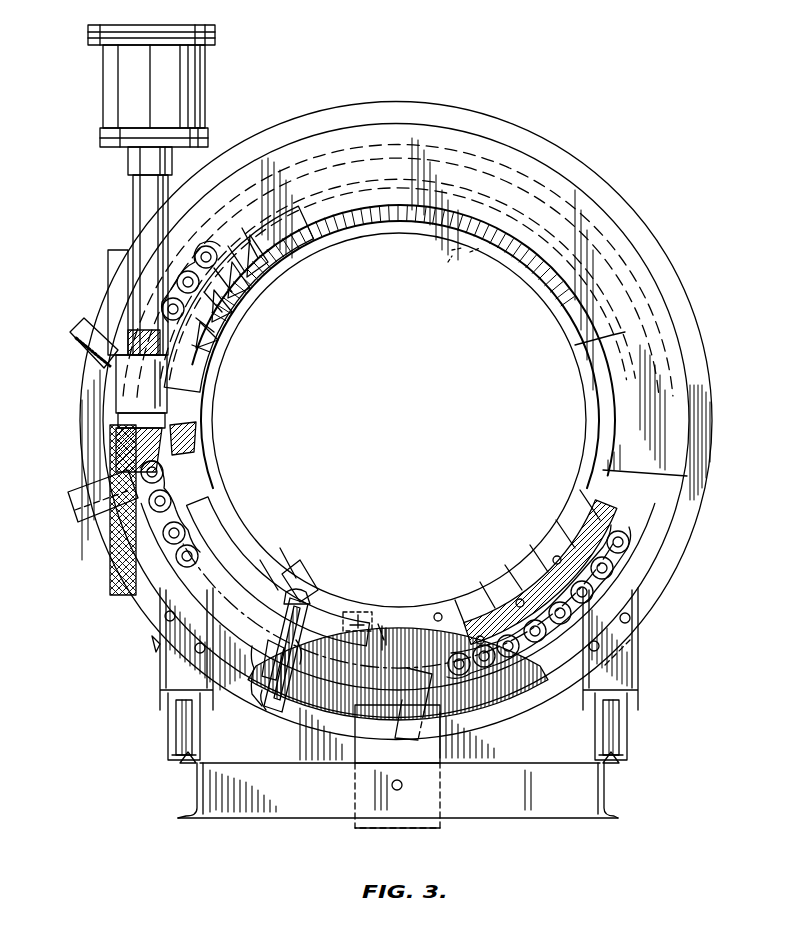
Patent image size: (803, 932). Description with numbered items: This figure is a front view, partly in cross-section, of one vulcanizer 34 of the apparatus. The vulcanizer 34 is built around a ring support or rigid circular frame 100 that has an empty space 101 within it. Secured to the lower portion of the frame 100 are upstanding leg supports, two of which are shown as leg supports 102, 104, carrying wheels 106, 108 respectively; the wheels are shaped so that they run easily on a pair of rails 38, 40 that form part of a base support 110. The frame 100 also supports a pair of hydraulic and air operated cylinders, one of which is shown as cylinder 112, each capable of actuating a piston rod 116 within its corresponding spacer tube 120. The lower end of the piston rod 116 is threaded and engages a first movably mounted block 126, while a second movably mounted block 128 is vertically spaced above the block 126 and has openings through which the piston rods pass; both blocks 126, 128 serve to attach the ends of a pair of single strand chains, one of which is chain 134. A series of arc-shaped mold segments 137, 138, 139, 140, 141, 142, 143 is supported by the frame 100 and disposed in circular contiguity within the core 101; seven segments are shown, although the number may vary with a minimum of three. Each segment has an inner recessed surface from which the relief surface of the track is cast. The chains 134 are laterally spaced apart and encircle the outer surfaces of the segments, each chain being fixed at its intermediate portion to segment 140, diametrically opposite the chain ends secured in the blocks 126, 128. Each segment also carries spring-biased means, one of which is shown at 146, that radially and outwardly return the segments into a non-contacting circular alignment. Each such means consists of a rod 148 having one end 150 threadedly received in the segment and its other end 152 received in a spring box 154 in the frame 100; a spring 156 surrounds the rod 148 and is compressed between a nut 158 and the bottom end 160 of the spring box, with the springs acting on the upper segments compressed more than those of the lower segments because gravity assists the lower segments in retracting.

The vulcanizer 34 is at (536, 84).
The rail 38 is at (178, 758).
The rail 40 is at (620, 758).
The ring support or rigid circular frame 100 is at (583, 170).
The empty space 101 is at (403, 414).
The leg support 102 is at (160, 645).
The leg support 104 is at (626, 660).
The wheel 106 is at (166, 742).
The wheel 108 is at (630, 746).
The base support 110 is at (528, 828).
The hydraulic and air operated cylinder 112 is at (185, 94).
The piston rod 116 is at (140, 340).
The spacer tube 120 is at (140, 205).
The first movably mounted block 126 is at (128, 470).
The second movably mounted block 128 is at (152, 393).
The single strand chain 134 is at (622, 552).
The arc-shaped mold segment 137 is at (244, 312).
The arc-shaped mold segment 138 is at (364, 232).
The arc-shaped mold segment 139 is at (480, 262).
The arc-shaped mold segment 140 is at (583, 387).
The arc-shaped mold segment 141 is at (540, 537).
The arc-shaped mold segment 142 is at (352, 612).
The arc-shaped mold segment 143 is at (256, 548).
The spring-biased means 146 is at (298, 595).
The rod 148 is at (380, 628).
The end of rod 150 is at (312, 603).
The end of rod 152 is at (305, 688).
The spring box 154 is at (282, 716).
The spring 156 is at (272, 690).
The nut 158 is at (342, 706).
The bottom end of spring box 160 is at (278, 662).